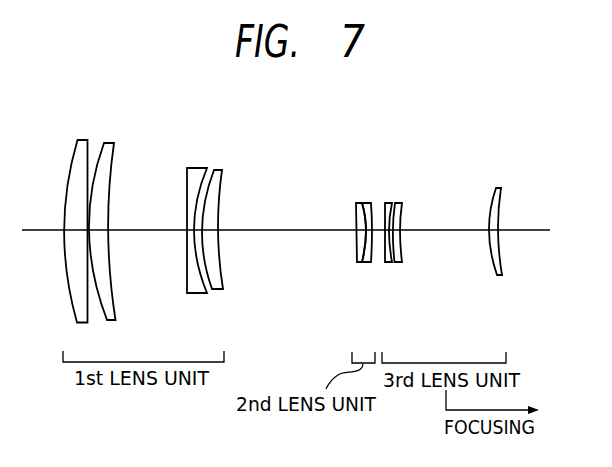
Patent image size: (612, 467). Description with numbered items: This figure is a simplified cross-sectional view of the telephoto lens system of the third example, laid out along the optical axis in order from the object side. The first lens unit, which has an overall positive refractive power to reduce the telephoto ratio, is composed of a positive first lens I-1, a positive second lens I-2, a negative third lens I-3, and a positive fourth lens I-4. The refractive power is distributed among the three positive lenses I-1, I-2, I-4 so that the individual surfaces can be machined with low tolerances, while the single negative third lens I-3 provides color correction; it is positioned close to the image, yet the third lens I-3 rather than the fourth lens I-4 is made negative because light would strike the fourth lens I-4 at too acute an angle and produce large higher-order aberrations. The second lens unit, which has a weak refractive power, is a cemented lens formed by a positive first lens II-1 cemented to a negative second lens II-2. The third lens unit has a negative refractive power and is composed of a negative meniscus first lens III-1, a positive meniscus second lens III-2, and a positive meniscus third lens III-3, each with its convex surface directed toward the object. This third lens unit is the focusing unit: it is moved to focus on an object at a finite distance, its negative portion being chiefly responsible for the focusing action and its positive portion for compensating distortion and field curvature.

The positive first lens I-1 is at (82, 138).
The positive second lens I-2 is at (110, 142).
The negative third lens I-3 is at (194, 167).
The positive fourth lens I-4 is at (220, 170).
The positive first lens II-1 is at (357, 199).
The negative second lens II-2 is at (368, 200).
The negative meniscus first lens III-1 is at (388, 200).
The positive meniscus second lens III-2 is at (402, 200).
The positive meniscus third lens III-3 is at (498, 188).